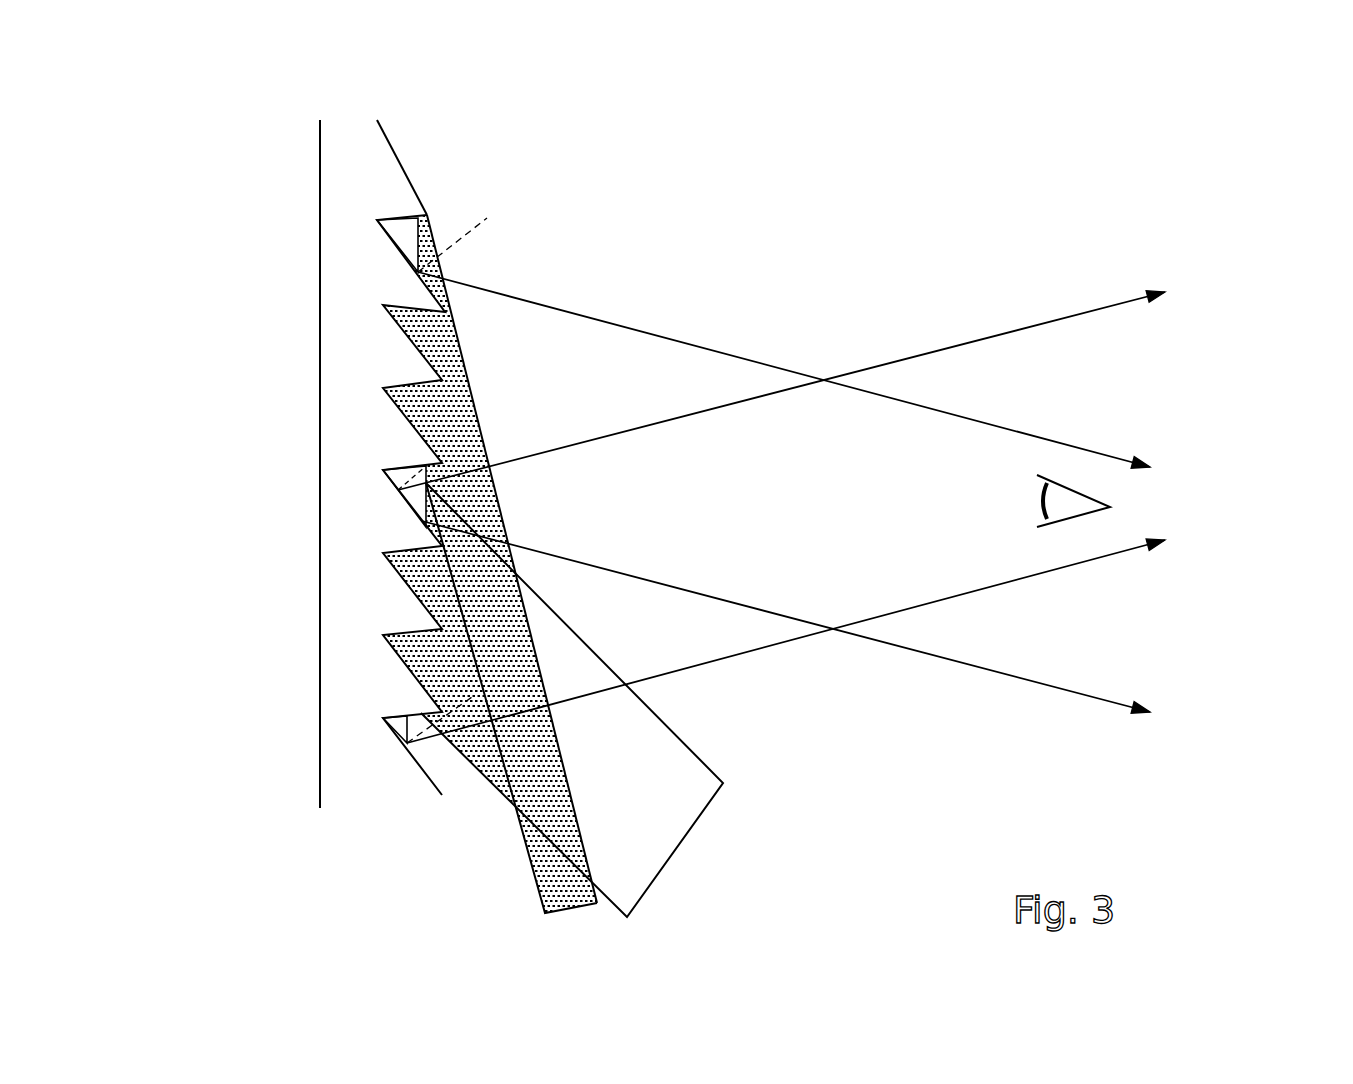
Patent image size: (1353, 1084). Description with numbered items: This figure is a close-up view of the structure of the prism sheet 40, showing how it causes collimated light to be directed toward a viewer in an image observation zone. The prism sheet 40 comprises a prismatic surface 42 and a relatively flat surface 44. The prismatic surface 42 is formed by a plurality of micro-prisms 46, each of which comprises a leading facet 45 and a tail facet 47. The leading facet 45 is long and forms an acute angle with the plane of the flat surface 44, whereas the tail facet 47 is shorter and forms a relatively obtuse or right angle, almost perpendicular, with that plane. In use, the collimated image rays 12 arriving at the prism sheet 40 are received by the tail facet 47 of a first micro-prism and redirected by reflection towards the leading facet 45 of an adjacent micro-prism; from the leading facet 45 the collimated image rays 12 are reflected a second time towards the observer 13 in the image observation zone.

The prism sheet 40 is at (232, 123).
The prismatic surface 42 is at (487, 493).
The flat surface 44 is at (318, 299).
The leading facet 45 is at (413, 178).
The micro-prisms 46 is at (462, 304).
The tail facet 47 is at (422, 217).
The collimated image rays 12 is at (550, 868).
The observer 13 is at (1083, 515).